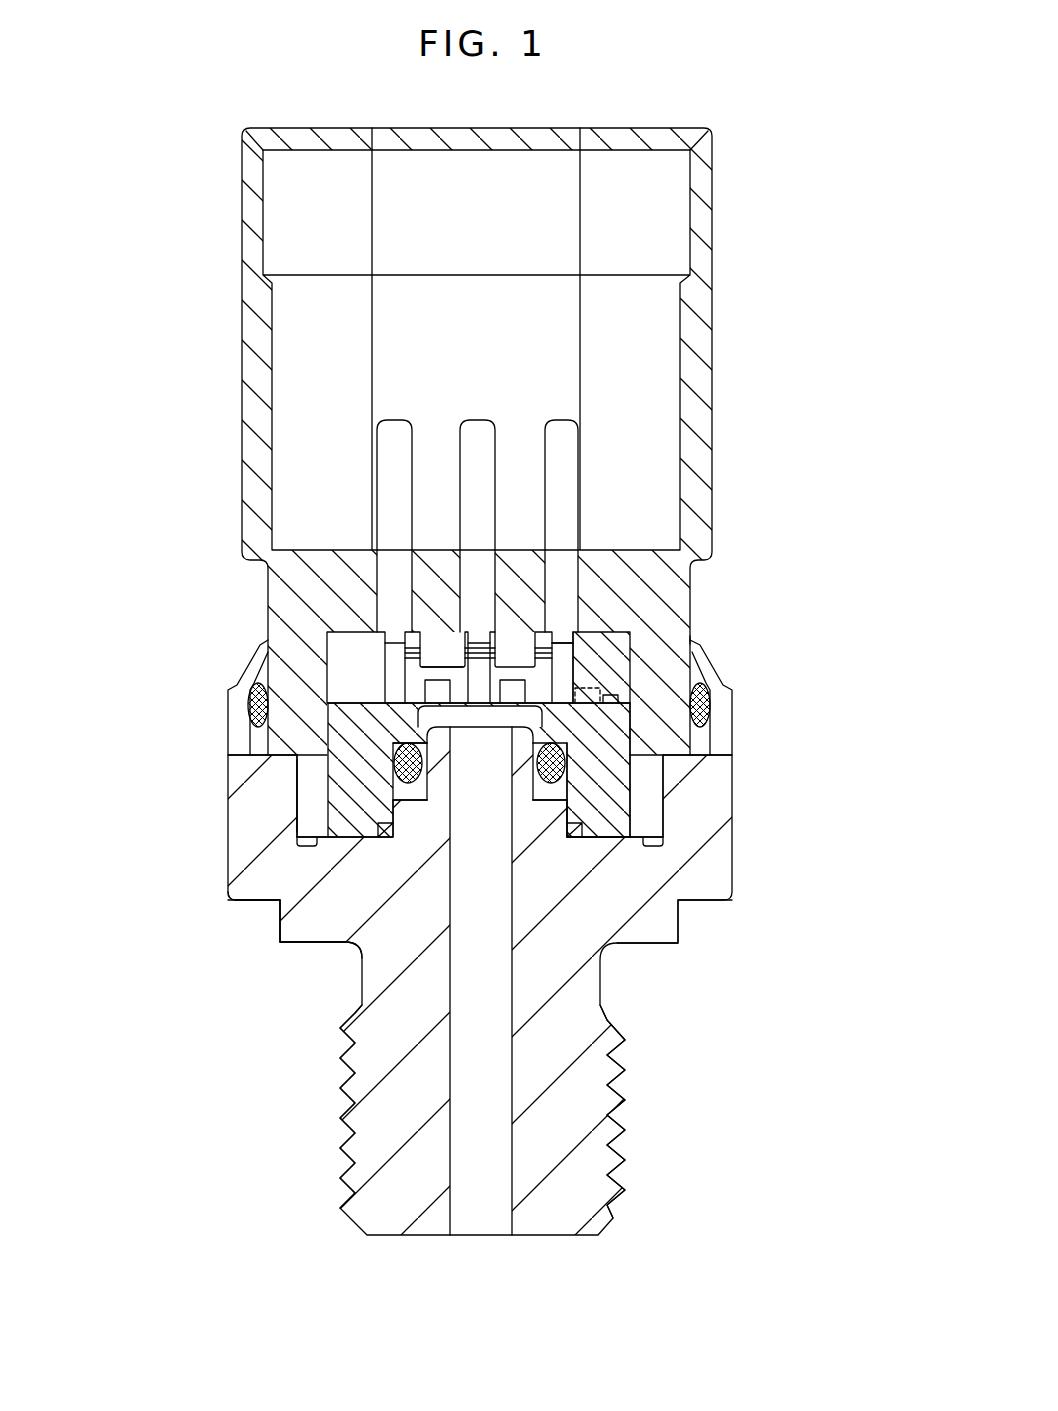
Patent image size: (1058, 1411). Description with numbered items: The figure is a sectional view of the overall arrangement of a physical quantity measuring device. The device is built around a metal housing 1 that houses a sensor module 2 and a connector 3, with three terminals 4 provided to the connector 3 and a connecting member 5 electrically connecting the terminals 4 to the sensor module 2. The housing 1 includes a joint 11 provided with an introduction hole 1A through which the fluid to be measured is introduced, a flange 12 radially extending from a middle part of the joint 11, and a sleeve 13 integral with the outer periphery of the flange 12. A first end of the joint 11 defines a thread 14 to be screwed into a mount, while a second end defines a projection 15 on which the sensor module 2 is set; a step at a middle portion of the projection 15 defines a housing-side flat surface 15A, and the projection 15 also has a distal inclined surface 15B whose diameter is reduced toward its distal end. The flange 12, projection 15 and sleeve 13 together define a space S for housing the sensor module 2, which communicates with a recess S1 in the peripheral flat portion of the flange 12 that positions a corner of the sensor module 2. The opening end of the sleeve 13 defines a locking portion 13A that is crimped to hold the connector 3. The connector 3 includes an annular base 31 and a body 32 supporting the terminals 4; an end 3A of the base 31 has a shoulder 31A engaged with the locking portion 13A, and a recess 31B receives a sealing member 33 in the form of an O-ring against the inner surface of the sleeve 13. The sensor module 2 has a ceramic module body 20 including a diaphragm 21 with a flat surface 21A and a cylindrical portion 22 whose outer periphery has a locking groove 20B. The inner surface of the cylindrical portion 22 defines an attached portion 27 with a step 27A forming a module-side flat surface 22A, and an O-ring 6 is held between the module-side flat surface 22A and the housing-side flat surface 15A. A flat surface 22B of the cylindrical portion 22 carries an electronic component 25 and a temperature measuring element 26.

The housing 1 is at (155, 1022).
The introduction hole 1A is at (512, 1050).
The sensor module 2 is at (345, 700).
The connector 3 is at (199, 136).
The end of the base 3A is at (262, 705).
The terminal 4 is at (609, 473).
The connecting member 5 is at (452, 654).
The O-ring 6 is at (410, 788).
The joint 11 is at (643, 1046).
The flange 12 is at (650, 895).
The sleeve 13 is at (228, 762).
The locking portion 13A is at (712, 640).
The thread 14 is at (347, 1105).
The projection 15 is at (552, 788).
The housing-side flat surface 15A is at (388, 840).
The distal inclined surface 15B is at (398, 790).
The module body 20 is at (368, 722).
The locking groove 20B is at (305, 800).
The diaphragm 21 is at (483, 712).
The flat surface 21A is at (502, 690).
The cylindrical portion 22 is at (610, 776).
The module-side flat surface 22A is at (424, 740).
The flat surface 22B is at (595, 688).
The electronic component 25 is at (578, 664).
The temperature measuring element 26 is at (612, 696).
The attached portion 27 is at (556, 848).
The step 27A is at (545, 733).
The base 31 is at (258, 660).
The shoulder 31A is at (722, 660).
The recess 31B is at (718, 746).
The body 32 is at (242, 318).
The sealing member 33 is at (712, 705).
The space S is at (296, 823).
The recess S1 is at (304, 843).